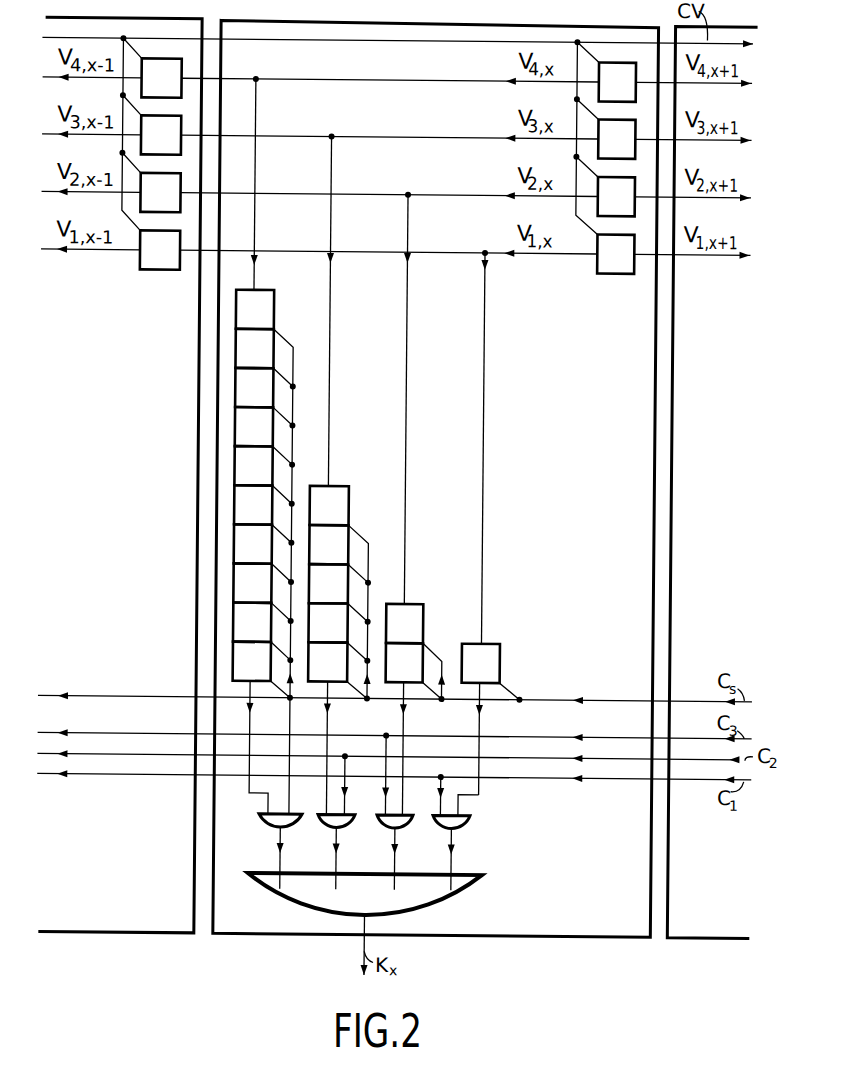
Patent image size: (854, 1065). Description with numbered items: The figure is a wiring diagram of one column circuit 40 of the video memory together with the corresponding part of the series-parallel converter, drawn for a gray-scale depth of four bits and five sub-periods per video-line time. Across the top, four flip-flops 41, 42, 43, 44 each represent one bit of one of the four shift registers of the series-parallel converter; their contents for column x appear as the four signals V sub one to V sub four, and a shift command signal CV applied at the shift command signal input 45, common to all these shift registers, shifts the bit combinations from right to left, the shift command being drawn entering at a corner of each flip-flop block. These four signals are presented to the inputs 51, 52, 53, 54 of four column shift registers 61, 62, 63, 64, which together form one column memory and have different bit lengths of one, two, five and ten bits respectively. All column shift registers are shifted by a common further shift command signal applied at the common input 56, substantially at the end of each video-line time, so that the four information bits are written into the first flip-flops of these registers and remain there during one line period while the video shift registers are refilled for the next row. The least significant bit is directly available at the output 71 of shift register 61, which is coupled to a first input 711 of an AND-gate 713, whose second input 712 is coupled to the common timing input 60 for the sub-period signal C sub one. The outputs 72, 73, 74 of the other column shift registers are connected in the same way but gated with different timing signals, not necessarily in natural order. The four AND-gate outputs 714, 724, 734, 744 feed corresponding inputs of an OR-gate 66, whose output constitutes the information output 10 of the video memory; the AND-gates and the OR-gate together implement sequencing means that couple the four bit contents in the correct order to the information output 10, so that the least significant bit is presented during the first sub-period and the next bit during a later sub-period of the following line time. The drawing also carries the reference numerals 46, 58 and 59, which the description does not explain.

The information output 10 is at (366, 939).
The column circuit 40 is at (562, 937).
The flip-flop 41 is at (616, 233).
The flip-flop 42 is at (616, 176).
The flip-flop 43 is at (616, 118).
The flip-flop 44 is at (616, 61).
The shift command signal input 45 is at (742, 40).
The connection line 46 is at (595, 242).
The input of column shift register 51 is at (483, 642).
The input of column shift register 52 is at (405, 603).
The input of column shift register 53 is at (331, 486).
The input of column shift register 54 is at (257, 291).
The common input 56 is at (680, 699).
The control line C3 58 is at (680, 737).
The control line C2 59 is at (678, 757).
The common timing input 60 is at (679, 778).
The column shift register 61 is at (501, 663).
The column shift register 62 is at (424, 626).
The column shift register 63 is at (349, 561).
The column shift register 64 is at (272, 433).
The OR-gate 66 is at (466, 891).
The output of shift register 71 is at (486, 683).
The output of column shift register 72 is at (409, 683).
The output of column shift register 73 is at (333, 683).
The output of column shift register 74 is at (256, 683).
The first input of AND-gate 711 is at (468, 815).
The second input of AND-gate 712 is at (444, 812).
The AND-gate 713 is at (471, 824).
The AND-gate output 714 is at (470, 853).
The AND-gate output 724 is at (395, 831).
The AND-gate output 734 is at (336, 831).
The AND-gate output 744 is at (278, 831).